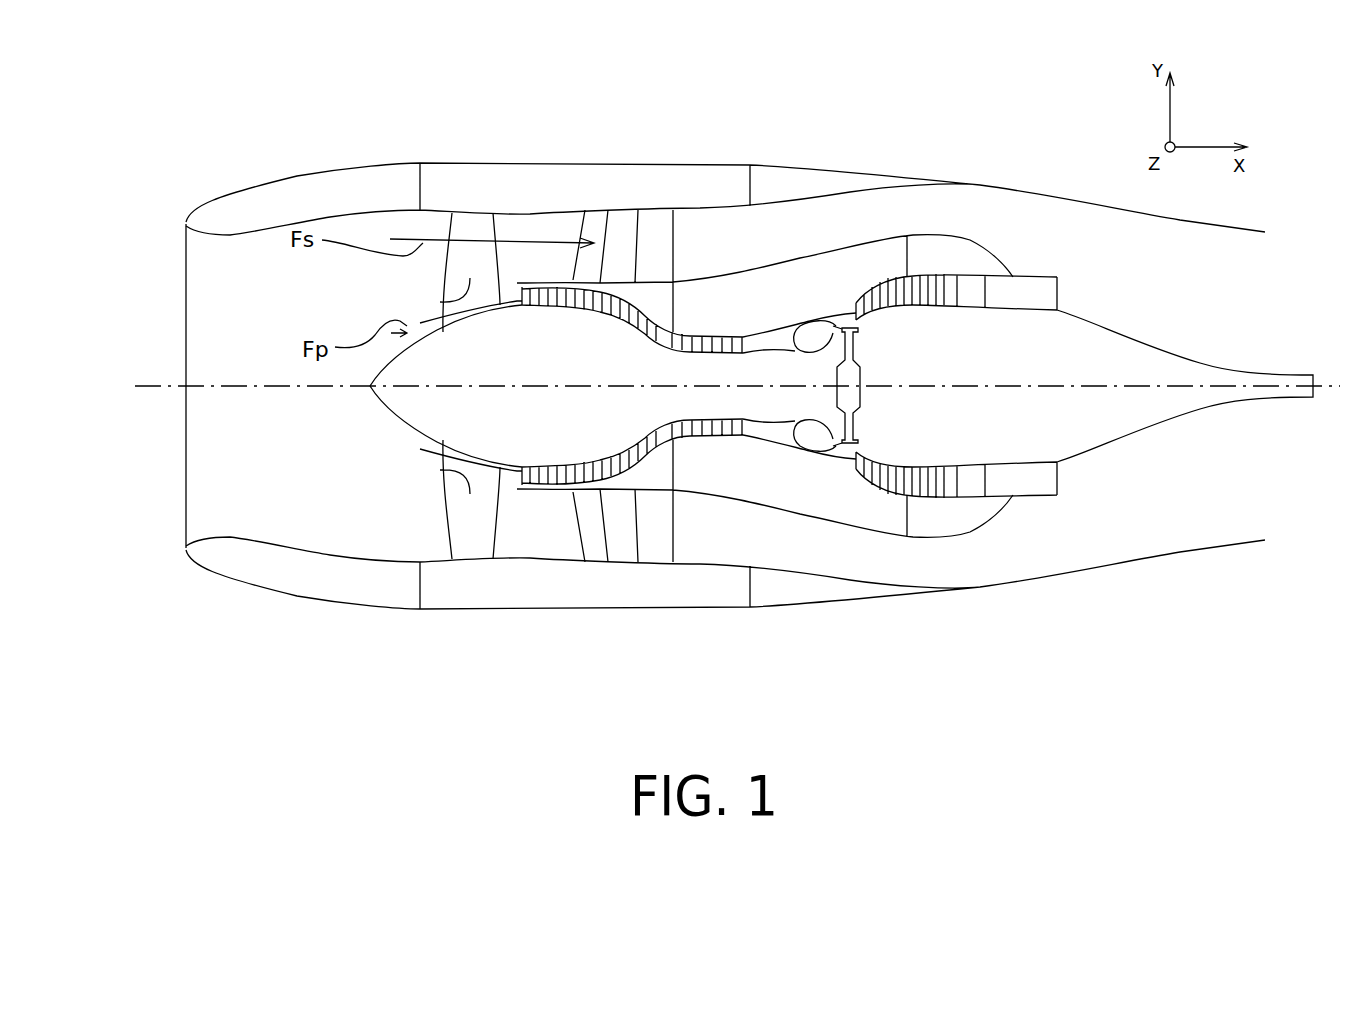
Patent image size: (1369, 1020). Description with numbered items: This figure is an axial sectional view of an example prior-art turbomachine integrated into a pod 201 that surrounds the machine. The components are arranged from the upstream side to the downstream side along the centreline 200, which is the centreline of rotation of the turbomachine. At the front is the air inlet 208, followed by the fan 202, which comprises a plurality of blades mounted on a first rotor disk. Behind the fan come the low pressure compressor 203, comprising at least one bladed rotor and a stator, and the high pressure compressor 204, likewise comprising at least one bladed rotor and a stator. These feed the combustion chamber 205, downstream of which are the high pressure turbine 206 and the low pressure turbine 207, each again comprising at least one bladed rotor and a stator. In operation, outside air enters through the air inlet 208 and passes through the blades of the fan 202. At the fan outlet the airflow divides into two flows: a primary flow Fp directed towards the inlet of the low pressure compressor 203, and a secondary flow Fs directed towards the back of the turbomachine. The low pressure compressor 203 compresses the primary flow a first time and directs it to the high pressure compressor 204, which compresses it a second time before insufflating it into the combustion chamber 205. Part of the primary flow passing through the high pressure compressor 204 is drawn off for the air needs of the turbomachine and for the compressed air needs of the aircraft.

The centreline 200 is at (147, 386).
The pod 201 is at (292, 188).
The fan 202 is at (437, 302).
The low pressure compressor 203 is at (437, 480).
The high pressure compressor 204 is at (707, 427).
The combustion chamber 205 is at (805, 328).
The high pressure turbine 206 is at (858, 330).
The low pressure turbine 207 is at (947, 292).
The air inlet 208 is at (208, 471).